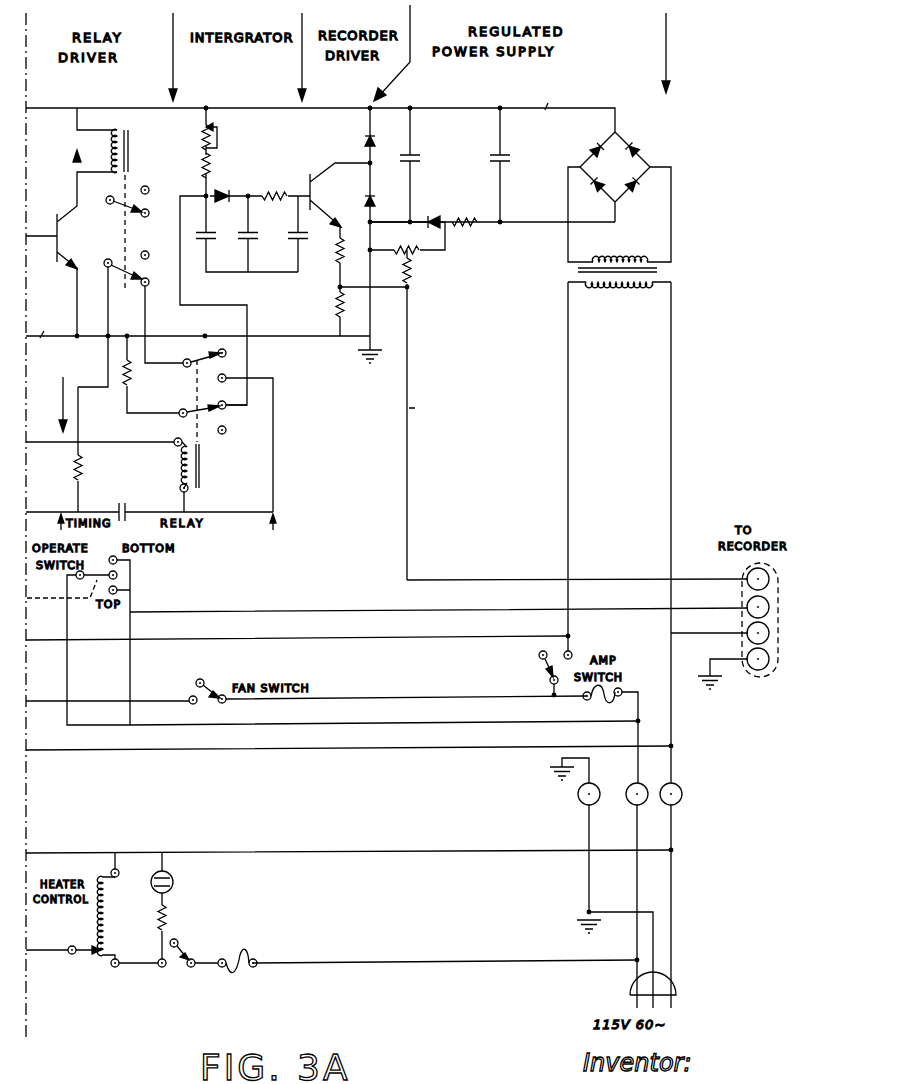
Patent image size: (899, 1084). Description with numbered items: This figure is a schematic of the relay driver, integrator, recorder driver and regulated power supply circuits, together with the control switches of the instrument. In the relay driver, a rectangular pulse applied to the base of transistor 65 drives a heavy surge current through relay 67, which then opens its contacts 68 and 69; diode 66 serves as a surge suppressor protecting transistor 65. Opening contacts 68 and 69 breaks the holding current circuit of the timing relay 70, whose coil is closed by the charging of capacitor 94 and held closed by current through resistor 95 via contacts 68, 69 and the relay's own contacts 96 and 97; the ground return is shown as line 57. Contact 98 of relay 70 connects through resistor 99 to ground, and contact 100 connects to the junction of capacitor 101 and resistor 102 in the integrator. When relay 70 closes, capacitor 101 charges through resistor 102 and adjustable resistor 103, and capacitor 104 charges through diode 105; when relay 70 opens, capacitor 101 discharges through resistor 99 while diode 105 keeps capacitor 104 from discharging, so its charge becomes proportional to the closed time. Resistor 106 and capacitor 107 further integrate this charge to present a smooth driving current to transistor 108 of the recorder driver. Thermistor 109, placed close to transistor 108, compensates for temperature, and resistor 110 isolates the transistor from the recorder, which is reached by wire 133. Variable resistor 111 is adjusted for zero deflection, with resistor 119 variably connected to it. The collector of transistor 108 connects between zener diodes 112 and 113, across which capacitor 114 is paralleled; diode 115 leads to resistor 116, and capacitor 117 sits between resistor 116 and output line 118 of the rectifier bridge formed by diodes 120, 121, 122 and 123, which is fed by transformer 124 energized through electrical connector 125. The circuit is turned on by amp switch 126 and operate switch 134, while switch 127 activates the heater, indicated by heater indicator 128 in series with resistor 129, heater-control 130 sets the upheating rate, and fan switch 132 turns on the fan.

The ground return line 57 is at (198, 326).
The transistor 65 is at (53, 268).
The diode 66 is at (83, 154).
The relay 67 is at (132, 150).
The contact of relay 67 68 is at (110, 313).
The contact of relay 67 69 is at (162, 315).
The timing relay 70 is at (125, 475).
The capacitor 94 is at (149, 503).
The resistor 95 is at (90, 449).
The contact of relay 70 96 is at (194, 368).
The contact of relay 70 97 is at (245, 443).
The contact of relay 70 98 is at (192, 402).
The resistor 99 is at (151, 374).
The contact of relay 70 100 is at (238, 413).
The capacitor 101 is at (197, 227).
The resistor 102 is at (193, 165).
The adjustable resistor 103 is at (196, 136).
The capacitor 104 is at (241, 234).
The diode 105 is at (227, 186).
The resistor 106 is at (274, 185).
The capacitor 107 is at (289, 234).
The transistor 108 is at (340, 195).
The thermistor 109 is at (327, 311).
The resistor 110 is at (330, 256).
The variable resistor 111 is at (407, 238).
The zener diode 112 is at (387, 194).
The zener diode 113 is at (355, 140).
The capacitor 114 is at (426, 165).
The diode 115 is at (426, 213).
The resistor 116 is at (466, 212).
The capacitor 117 is at (516, 165).
The output line 118 is at (512, 109).
The resistor 119 is at (422, 268).
The diode 120 is at (589, 148).
The diode 121 is at (641, 148).
The diode 122 is at (592, 188).
The diode 123 is at (636, 188).
The transformer 124 is at (617, 282).
The electrical connector 125 is at (674, 982).
The amp switch 126 is at (539, 674).
The switch 127 is at (213, 956).
The heater indicator 128 is at (206, 882).
The resistor 129 is at (179, 936).
The heater-control 130 is at (85, 909).
The fan switch 132 is at (306, 681).
The wire 133 is at (427, 433).
The operate switch 134 is at (78, 640).